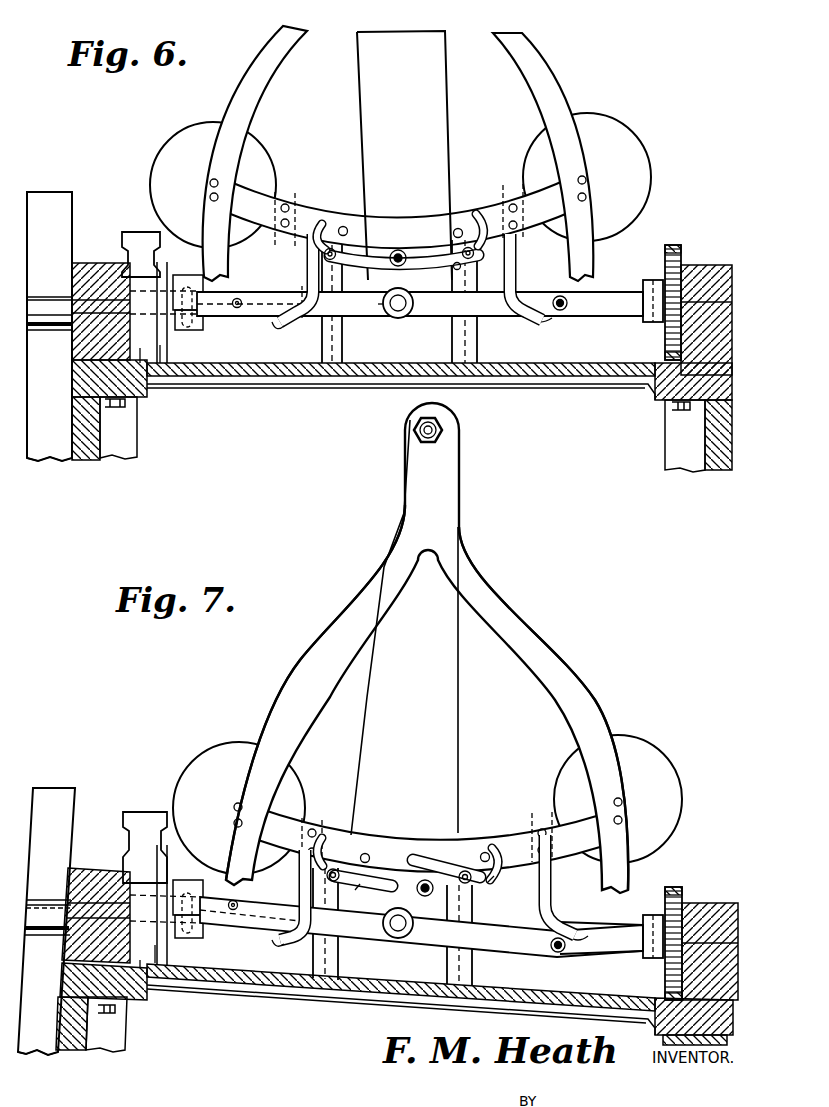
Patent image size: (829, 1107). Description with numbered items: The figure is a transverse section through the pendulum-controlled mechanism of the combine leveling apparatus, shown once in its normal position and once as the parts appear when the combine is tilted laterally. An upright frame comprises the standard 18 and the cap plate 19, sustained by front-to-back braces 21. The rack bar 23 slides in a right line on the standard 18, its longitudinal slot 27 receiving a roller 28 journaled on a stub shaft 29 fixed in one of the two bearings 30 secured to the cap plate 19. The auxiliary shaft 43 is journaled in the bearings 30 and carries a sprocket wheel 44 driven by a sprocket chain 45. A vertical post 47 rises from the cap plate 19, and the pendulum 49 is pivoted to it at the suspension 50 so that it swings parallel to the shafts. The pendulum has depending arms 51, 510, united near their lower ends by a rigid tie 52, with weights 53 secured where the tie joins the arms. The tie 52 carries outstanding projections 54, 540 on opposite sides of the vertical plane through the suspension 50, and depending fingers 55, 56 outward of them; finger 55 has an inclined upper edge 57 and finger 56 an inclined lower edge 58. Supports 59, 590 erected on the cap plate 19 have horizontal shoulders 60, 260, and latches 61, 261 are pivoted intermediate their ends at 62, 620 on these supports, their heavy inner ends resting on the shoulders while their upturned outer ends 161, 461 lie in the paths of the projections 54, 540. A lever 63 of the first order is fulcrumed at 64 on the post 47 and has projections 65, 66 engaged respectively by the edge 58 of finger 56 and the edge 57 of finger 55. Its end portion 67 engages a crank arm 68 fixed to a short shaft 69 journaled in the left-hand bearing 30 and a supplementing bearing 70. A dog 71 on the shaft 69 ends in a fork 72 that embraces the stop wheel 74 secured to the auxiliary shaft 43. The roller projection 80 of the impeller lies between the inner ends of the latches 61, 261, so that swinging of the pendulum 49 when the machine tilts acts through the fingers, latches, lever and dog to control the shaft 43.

In FIG. 6, the standard 18 is at (78, 460).
In FIG. 7, the standard 18 is at (70, 1050).
In FIG. 6, the cap plate 19 is at (300, 389).
In FIG. 7, the cap plate 19 is at (276, 990).
In FIG. 6, the front-to-back braces 21 is at (122, 444).
In FIG. 7, the front-to-back braces 21 is at (114, 1040).
In FIG. 6, the rack bar 23 is at (70, 177).
In FIG. 7, the rack bar 23 is at (51, 788).
In FIG. 6, the longitudinal slot 27 is at (42, 449).
In FIG. 7, the longitudinal slot 27 is at (35, 1046).
In FIG. 6, the roller 28 is at (50, 327).
In FIG. 7, the roller 28 is at (45, 937).
In FIG. 7, the stub shaft 29 is at (47, 905).
In FIG. 6, the bearings 30 is at (92, 265).
In FIG. 7, the bearings 30 is at (84, 964).
In FIG. 6, the auxiliary shaft 43 is at (622, 311).
In FIG. 7, the auxiliary shaft 43 is at (615, 930).
In FIG. 6, the sprocket wheel 44 is at (664, 276).
In FIG. 7, the sprocket wheel 44 is at (660, 972).
In FIG. 6, the sprocket chain 45 is at (682, 250).
In FIG. 7, the sprocket chain 45 is at (684, 890).
In FIG. 6, the vertical post 47 is at (448, 114).
In FIG. 7, the vertical post 47 is at (453, 683).
In FIG. 6, the pendulum 49 is at (399, 151).
In FIG. 7, the pendulum 49 is at (427, 648).
In FIG. 7, the pendulum suspension 50 is at (444, 431).
In FIG. 6, the pendulum arm 51 is at (553, 78).
In FIG. 7, the pendulum arm 51 is at (514, 620).
In FIG. 6, the pendulum arm 510 is at (276, 72).
In FIG. 7, the pendulum arm 510 is at (337, 611).
In FIG. 6, the rigid tie 52 is at (406, 221).
In FIG. 7, the rigid tie 52 is at (419, 842).
In FIG. 6, the weights 53 is at (206, 127).
In FIG. 7, the weights 53 is at (234, 742).
In FIG. 6, the projection 54 is at (462, 228).
In FIG. 7, the projection 54 is at (486, 852).
In FIG. 6, the projection 540 is at (345, 226).
In FIG. 7, the projection 540 is at (367, 853).
In FIG. 6, the depending finger 55 is at (306, 262).
In FIG. 7, the depending finger 55 is at (303, 888).
In FIG. 6, the depending finger 56 is at (516, 263).
In FIG. 7, the depending finger 56 is at (551, 888).
In FIG. 6, the inclined upper edge 57 is at (270, 318).
In FIG. 7, the inclined upper edge 57 is at (290, 890).
In FIG. 6, the inclined lower edge 58 is at (543, 318).
In FIG. 7, the inclined lower edge 58 is at (578, 940).
In FIG. 6, the support 59 is at (478, 353).
In FIG. 7, the support 59 is at (460, 986).
In FIG. 6, the support 590 is at (352, 350).
In FIG. 7, the support 590 is at (326, 982).
In FIG. 6, the shoulder 60 is at (454, 267).
In FIG. 7, the shoulder 60 is at (475, 884).
In FIG. 7, the latch 61 is at (445, 866).
In FIG. 6, the upturned outer end 161 is at (484, 212).
In FIG. 7, the upturned outer end 161 is at (500, 850).
In FIG. 6, the latch 261 is at (424, 253).
In FIG. 7, the latch 261 is at (380, 876).
In FIG. 6, the upturned outer end 461 is at (316, 222).
In FIG. 7, the upturned outer end 461 is at (337, 868).
In FIG. 6, the latch pivot 62 is at (472, 258).
In FIG. 7, the latch pivot 62 is at (490, 881).
In FIG. 6, the latch pivot 620 is at (304, 303).
In FIG. 6, the lever 63 is at (440, 309).
In FIG. 7, the lever 63 is at (483, 941).
In FIG. 6, the fulcrum 64 is at (392, 312).
In FIG. 7, the fulcrum 64 is at (396, 931).
In FIG. 6, the projection 65 is at (566, 309).
In FIG. 7, the projection 65 is at (553, 950).
In FIG. 6, the projection 66 is at (236, 309).
In FIG. 7, the projection 66 is at (236, 911).
In FIG. 6, the end portion 67 is at (210, 309).
In FIG. 7, the end portion 67 is at (215, 913).
In FIG. 6, the crank arm 68 is at (187, 280).
In FIG. 7, the crank arm 68 is at (188, 888).
In FIG. 6, the short shaft 69 is at (188, 327).
In FIG. 7, the short shaft 69 is at (189, 940).
In FIG. 6, the supplementing bearing 70 is at (165, 352).
In FIG. 7, the supplementing bearing 70 is at (157, 958).
In FIG. 6, the dog 71 is at (158, 280).
In FIG. 7, the dog 71 is at (140, 880).
In FIG. 6, the fork 72 is at (135, 231).
In FIG. 7, the fork 72 is at (143, 812).
In FIG. 6, the stop wheel 74 is at (148, 364).
In FIG. 7, the stop wheel 74 is at (142, 968).
In FIG. 6, the roller projection 80 is at (398, 267).
In FIG. 7, the roller projection 80 is at (426, 897).
In FIG. 6, the shoulder 260 is at (366, 305).
In FIG. 7, the shoulder 260 is at (357, 882).